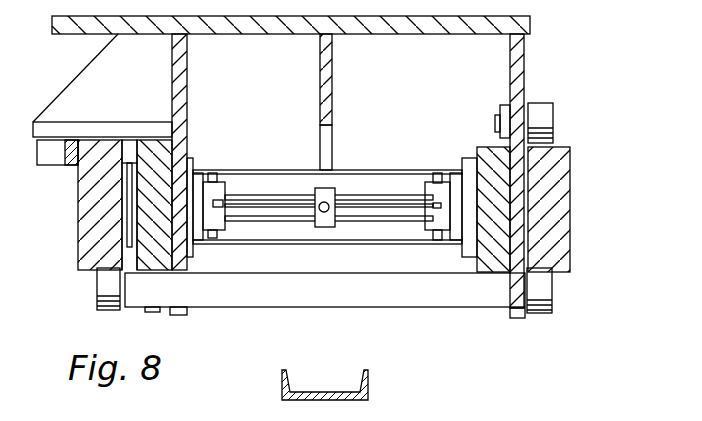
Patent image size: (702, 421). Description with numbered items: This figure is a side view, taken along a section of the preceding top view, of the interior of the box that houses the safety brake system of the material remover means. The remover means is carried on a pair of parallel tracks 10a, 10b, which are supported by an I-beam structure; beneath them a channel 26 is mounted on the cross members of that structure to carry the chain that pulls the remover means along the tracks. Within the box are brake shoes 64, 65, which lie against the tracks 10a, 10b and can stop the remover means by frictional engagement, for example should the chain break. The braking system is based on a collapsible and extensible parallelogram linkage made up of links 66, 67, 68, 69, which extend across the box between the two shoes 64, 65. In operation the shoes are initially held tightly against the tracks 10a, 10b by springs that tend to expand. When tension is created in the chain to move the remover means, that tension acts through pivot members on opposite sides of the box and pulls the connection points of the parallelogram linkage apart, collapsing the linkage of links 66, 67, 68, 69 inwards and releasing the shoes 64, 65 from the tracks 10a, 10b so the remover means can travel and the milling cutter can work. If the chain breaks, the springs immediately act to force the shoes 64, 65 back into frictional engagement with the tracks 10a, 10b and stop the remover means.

The track 10a is at (78, 246).
The track 10b is at (570, 185).
The shoe 64 is at (125, 205).
The shoe 65 is at (525, 213).
The link 66 is at (290, 217).
The link 67 is at (276, 197).
The link 68 is at (401, 230).
The link 69 is at (388, 197).
The channel 26 is at (370, 390).